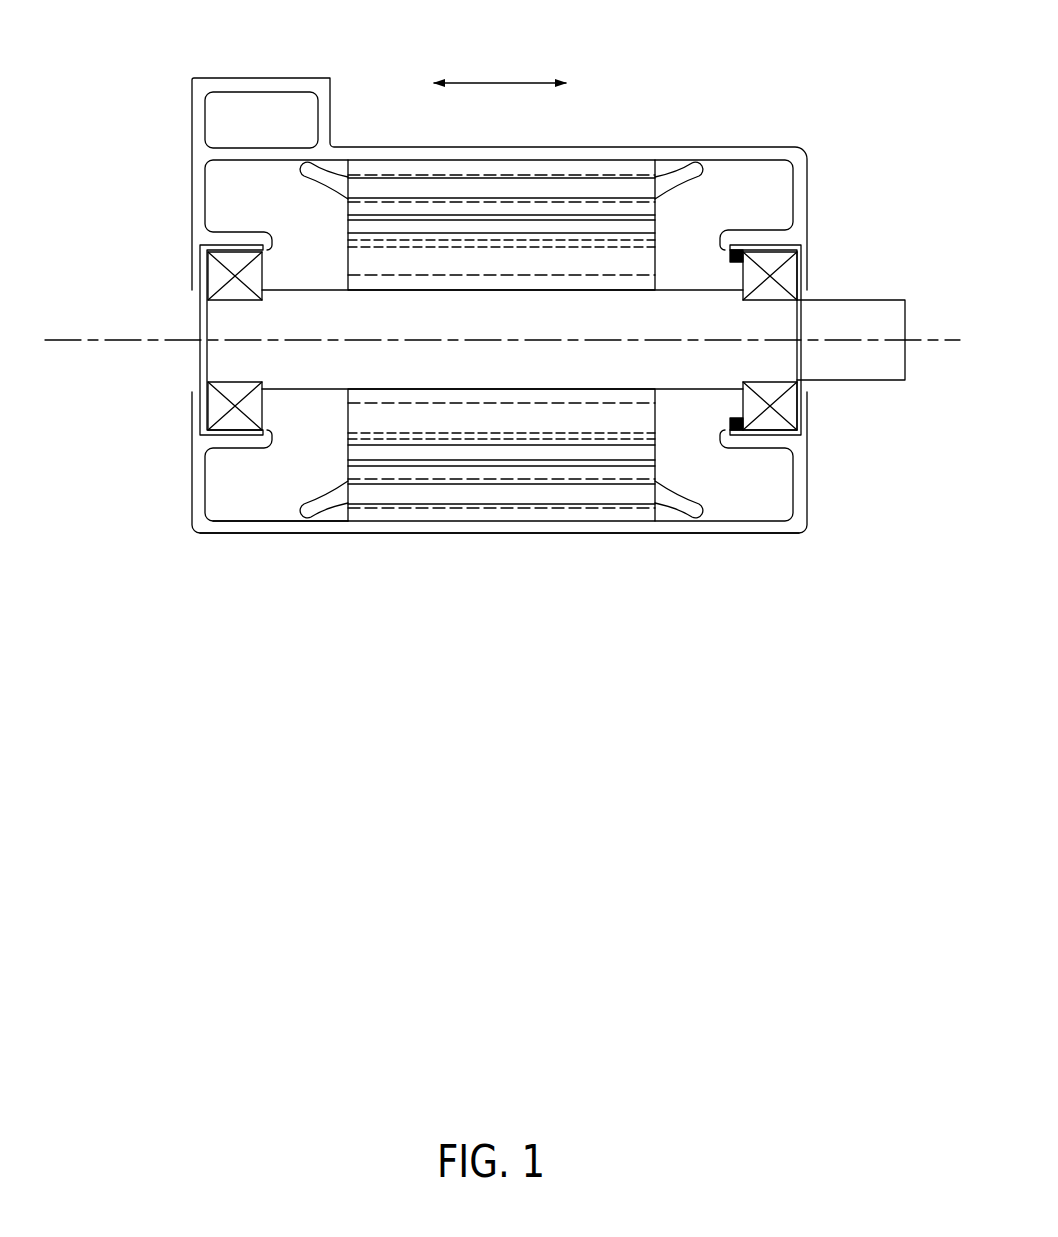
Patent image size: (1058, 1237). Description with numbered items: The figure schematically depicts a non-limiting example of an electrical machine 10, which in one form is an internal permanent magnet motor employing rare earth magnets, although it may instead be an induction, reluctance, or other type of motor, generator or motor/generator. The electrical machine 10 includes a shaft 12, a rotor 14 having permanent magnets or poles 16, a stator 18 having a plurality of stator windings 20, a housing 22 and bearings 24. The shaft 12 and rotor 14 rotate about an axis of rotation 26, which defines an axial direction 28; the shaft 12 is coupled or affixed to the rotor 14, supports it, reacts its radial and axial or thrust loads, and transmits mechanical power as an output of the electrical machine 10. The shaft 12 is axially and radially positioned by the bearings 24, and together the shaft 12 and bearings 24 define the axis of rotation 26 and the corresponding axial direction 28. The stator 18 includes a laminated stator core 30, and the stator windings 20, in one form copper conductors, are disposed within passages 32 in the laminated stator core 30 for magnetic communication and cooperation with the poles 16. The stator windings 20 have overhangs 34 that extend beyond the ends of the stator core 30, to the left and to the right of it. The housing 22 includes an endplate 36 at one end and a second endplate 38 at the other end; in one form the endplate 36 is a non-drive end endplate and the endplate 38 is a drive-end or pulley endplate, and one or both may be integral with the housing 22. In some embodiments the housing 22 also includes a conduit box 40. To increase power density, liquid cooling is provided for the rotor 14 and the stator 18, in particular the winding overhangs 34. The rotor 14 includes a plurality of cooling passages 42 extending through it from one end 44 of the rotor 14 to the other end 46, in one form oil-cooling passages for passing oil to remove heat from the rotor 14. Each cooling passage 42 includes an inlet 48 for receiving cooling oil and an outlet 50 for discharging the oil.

The electrical machine 10 is at (120, 98).
The shaft 12 is at (860, 300).
The rotor 14 is at (660, 418).
The permanent magnets 16 is at (660, 227).
The stator 18 is at (301, 486).
The stator windings 20 is at (429, 185).
The housing 22 is at (375, 584).
The bearings 24 is at (200, 288).
The axis of rotation 26 is at (76, 342).
The axial direction 28 is at (508, 82).
The laminated stator core 30 is at (346, 200).
The passages 32 is at (498, 509).
The overhangs 34 is at (698, 163).
The endplate 36 is at (192, 487).
The second endplate 38 is at (808, 486).
The conduit box 40 is at (332, 100).
The cooling passages 42 is at (613, 248).
The one end of rotor 44 is at (657, 271).
The other end of rotor 46 is at (346, 272).
The inlet 48 is at (657, 241).
The outlet 50 is at (346, 241).